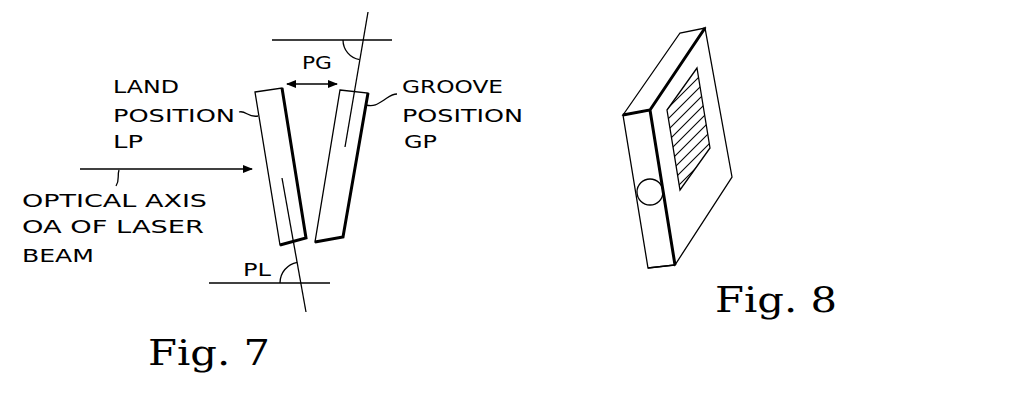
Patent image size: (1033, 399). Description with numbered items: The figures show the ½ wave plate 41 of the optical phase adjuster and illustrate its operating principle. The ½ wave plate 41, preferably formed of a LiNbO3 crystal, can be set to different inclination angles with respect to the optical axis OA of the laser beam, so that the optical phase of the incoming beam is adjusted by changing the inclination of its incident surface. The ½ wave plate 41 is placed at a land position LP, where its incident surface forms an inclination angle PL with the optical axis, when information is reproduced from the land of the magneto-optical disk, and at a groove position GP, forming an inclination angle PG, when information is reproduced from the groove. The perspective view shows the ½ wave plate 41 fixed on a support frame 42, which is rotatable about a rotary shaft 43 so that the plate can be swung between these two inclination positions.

In FIG. 7, the ½ wave plate 41 is at (306, 241).
In FIG. 8, the ½ wave plate 41 is at (693, 115).
In FIG. 8, the support frame 42 is at (648, 271).
In FIG. 8, the rotary shaft 43 is at (640, 192).